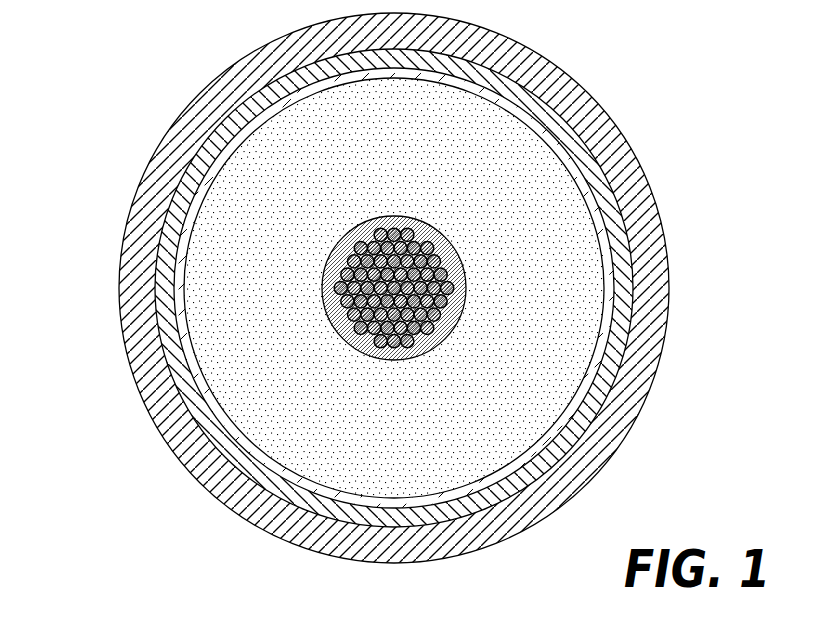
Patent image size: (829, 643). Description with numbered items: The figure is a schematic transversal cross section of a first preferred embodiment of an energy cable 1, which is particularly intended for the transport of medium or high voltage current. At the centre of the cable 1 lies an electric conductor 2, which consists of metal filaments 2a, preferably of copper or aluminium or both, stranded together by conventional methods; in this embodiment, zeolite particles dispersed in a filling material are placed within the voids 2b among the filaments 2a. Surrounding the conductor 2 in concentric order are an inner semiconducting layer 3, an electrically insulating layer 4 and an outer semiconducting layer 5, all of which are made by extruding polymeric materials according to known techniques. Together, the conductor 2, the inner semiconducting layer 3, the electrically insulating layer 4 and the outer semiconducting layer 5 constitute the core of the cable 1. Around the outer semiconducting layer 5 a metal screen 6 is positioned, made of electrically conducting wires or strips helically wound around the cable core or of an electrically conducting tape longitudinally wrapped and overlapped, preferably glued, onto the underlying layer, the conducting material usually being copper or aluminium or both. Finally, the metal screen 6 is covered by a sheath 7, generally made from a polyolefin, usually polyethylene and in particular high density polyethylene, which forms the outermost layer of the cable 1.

The cable 1 is at (181, 65).
The electric conductor 2 is at (421, 424).
The metal filaments 2a is at (350, 316).
The voids 2b is at (402, 332).
The inner semiconducting layer 3 is at (325, 294).
The electrically insulating layer 4 is at (590, 297).
The outer semiconducting layer 5 is at (193, 208).
The metal screen 6 is at (562, 125).
The sheath 7 is at (165, 146).